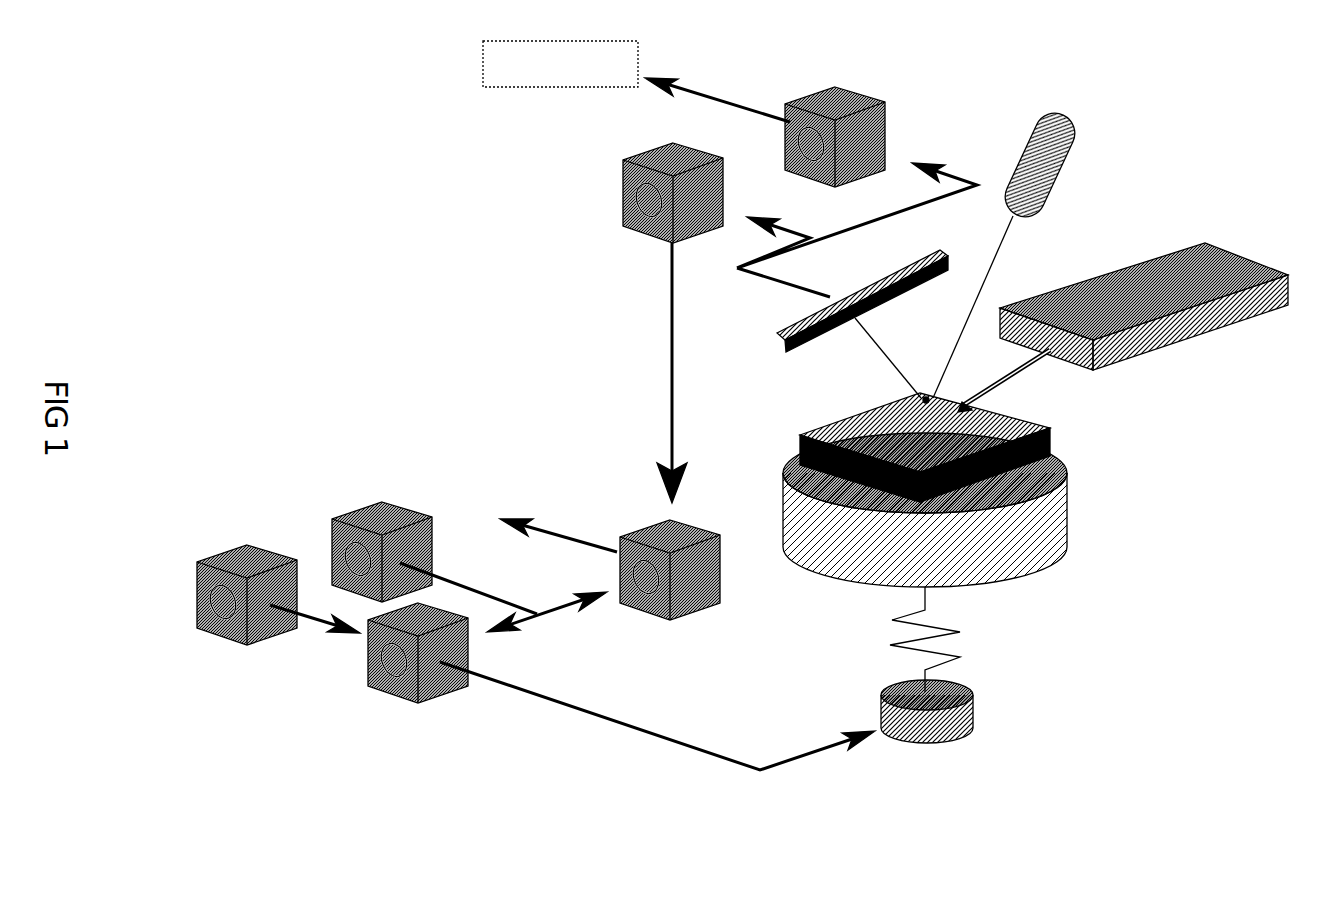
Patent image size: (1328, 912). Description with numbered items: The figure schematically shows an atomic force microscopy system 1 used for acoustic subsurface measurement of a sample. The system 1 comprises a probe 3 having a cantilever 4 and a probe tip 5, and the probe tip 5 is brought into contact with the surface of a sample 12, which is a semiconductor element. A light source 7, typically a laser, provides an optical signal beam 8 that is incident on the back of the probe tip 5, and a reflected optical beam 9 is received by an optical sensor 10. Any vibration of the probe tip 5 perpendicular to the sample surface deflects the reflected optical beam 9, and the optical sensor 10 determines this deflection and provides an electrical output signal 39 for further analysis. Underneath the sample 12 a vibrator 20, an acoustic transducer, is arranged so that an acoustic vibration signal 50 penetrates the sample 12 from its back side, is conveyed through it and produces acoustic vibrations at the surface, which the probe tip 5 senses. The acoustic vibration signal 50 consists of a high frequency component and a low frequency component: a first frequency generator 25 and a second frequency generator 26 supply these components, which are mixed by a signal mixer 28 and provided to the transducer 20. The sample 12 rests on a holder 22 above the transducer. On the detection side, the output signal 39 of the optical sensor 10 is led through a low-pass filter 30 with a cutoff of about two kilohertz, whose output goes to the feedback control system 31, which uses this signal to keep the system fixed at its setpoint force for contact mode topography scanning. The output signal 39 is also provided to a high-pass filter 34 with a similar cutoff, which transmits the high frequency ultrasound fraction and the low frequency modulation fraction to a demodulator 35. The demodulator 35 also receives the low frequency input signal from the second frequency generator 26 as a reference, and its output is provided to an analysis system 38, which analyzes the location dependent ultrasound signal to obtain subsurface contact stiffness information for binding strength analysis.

The atomic force microscopy system 1 is at (962, 535).
The probe 3 is at (1026, 372).
The cantilever 4 is at (994, 394).
The probe tip 5 is at (914, 428).
The light source 7 is at (1077, 164).
The optical signal beam 8 is at (972, 299).
The reflected optical beam 9 is at (877, 345).
The optical sensor 10 is at (786, 346).
The sample 12 is at (1052, 430).
The vibrator 20 is at (930, 744).
The cantilever holder 22 is at (1133, 266).
The first frequency generator 25 is at (236, 544).
The second frequency generator 26 is at (400, 500).
The signal mixer 28 is at (392, 690).
The low-pass filter 30 is at (848, 90).
The feedback control system 31 is at (560, 64).
The high-pass filter 34 is at (622, 182).
The demodulator 35 is at (690, 612).
The analysis system 38 is at (508, 516).
The output signal 39 is at (797, 290).
The acoustic vibration signal 50 is at (680, 744).